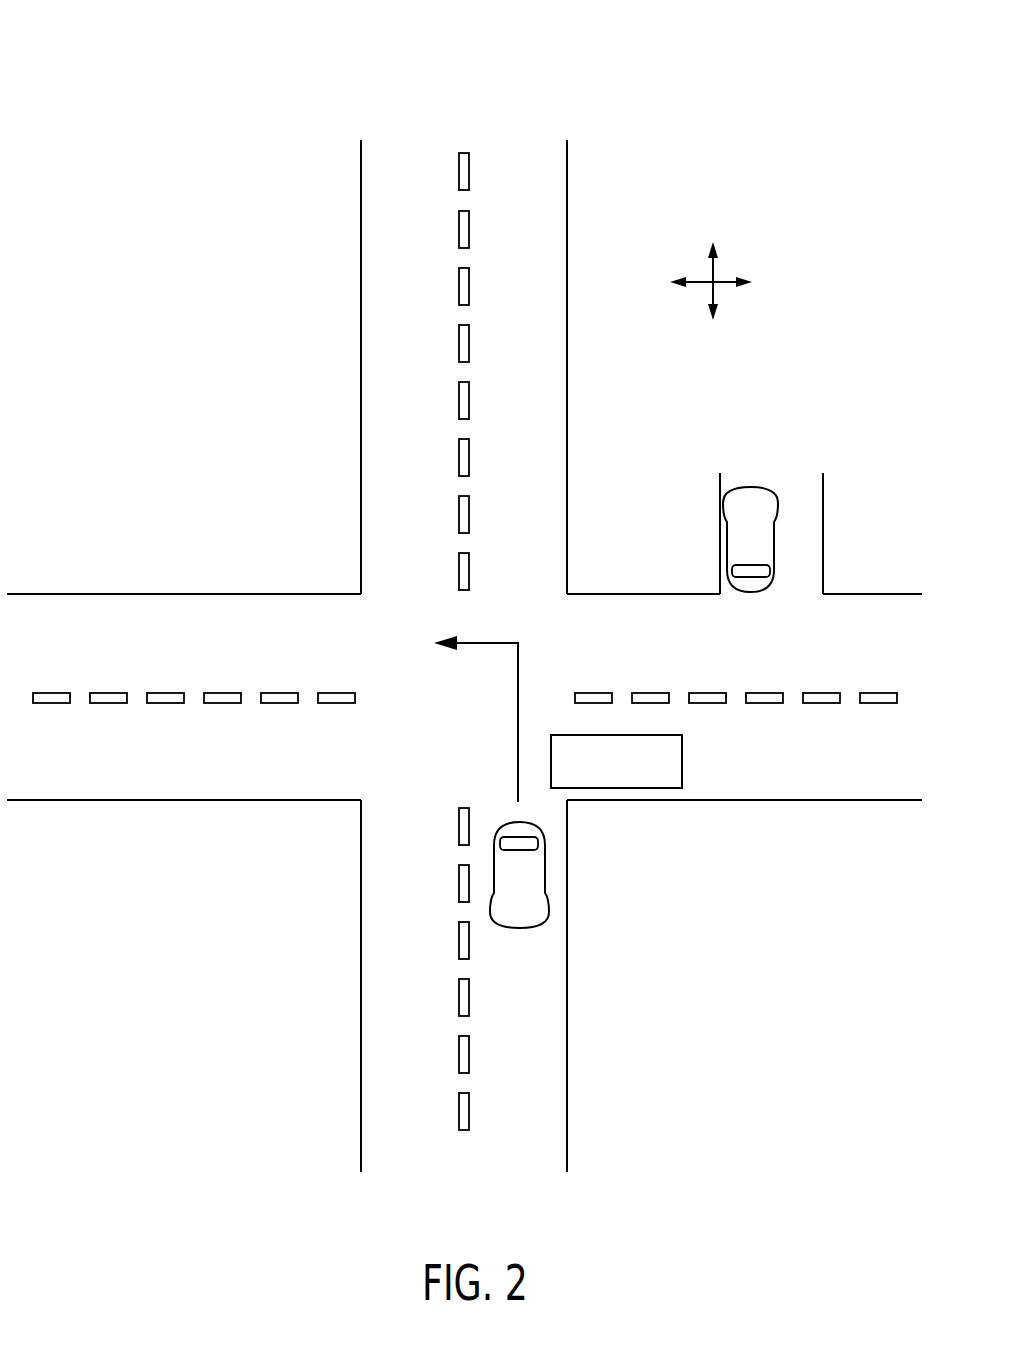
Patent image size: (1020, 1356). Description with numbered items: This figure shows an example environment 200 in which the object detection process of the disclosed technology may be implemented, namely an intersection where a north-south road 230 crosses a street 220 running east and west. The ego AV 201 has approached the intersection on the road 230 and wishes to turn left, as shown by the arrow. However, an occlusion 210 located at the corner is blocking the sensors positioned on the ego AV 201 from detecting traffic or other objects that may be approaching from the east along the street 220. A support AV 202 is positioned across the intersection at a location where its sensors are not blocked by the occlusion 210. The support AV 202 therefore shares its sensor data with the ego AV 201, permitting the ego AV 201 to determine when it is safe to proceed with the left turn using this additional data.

The driving environment / intersection scenario 200 is at (108, 84).
The ego AV 201 is at (533, 892).
The support AV 202 is at (765, 544).
The occlusion 210 is at (631, 779).
The street 220 is at (893, 657).
The north-south road 230 is at (540, 201).